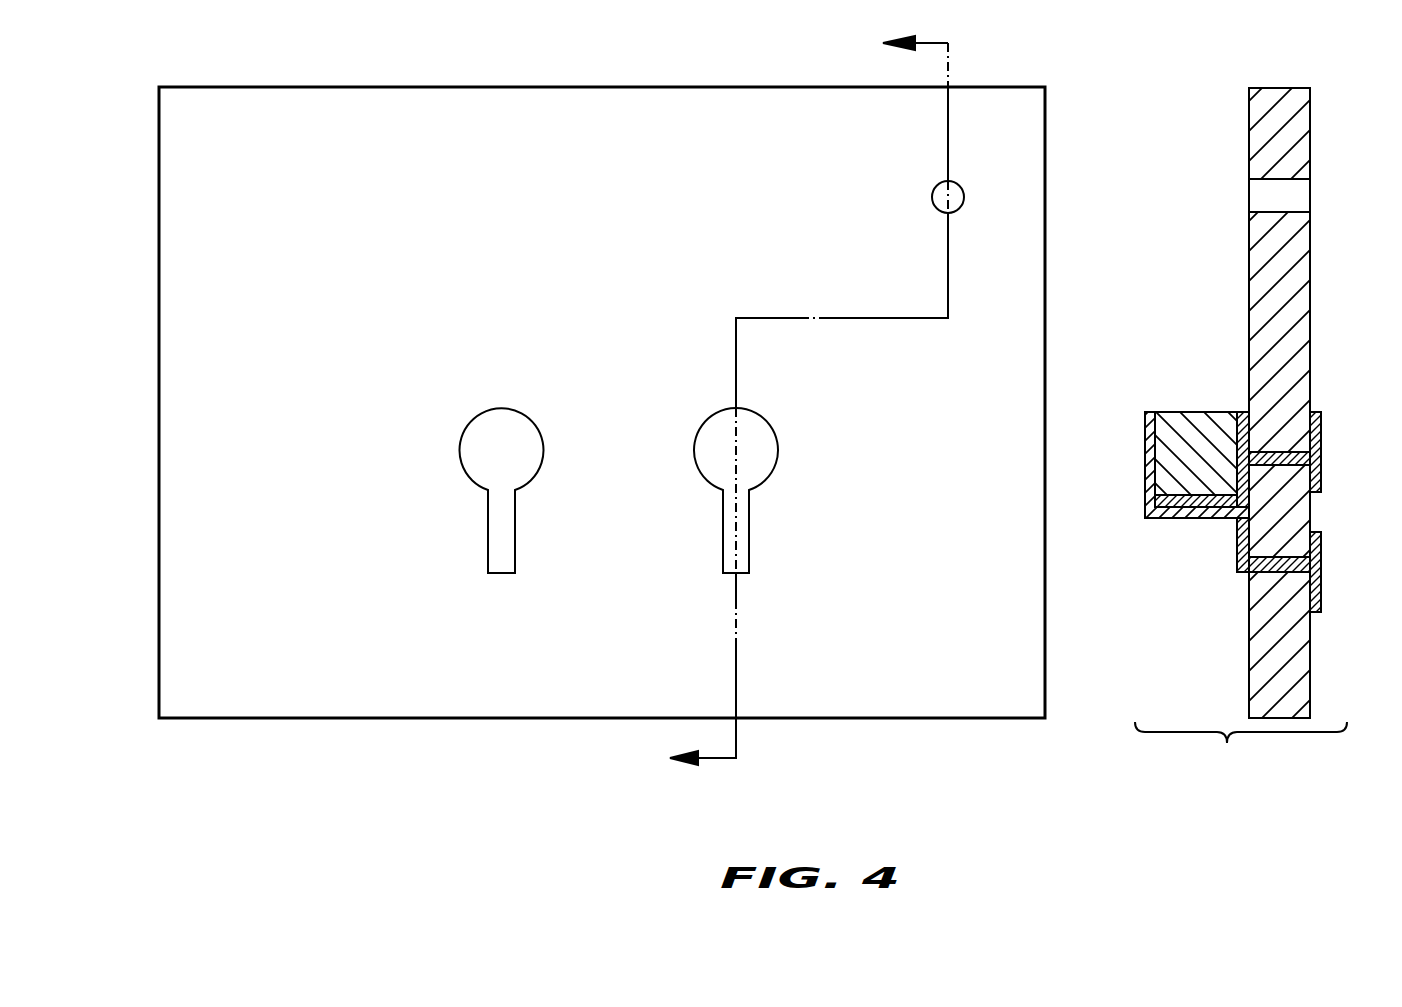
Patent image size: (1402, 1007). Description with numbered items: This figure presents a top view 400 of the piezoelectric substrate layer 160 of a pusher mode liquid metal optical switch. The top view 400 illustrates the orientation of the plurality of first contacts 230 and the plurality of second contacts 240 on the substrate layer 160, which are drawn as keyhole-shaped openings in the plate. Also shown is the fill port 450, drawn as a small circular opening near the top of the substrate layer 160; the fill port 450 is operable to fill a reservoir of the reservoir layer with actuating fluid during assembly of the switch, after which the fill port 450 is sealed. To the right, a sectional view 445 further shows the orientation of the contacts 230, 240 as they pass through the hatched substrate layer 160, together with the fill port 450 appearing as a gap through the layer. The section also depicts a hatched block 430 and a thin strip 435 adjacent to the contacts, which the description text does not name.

The top view 400 is at (178, 41).
The piezoelectric substrate layer 160 is at (168, 370).
The fill port 450 is at (945, 180).
The plurality of first contacts 230 is at (488, 412).
The plurality of second contacts 240 is at (723, 412).
The mounting block 430 is at (1202, 420).
The gasket strip 435 is at (1200, 507).
The sectional view 445 is at (738, 742).